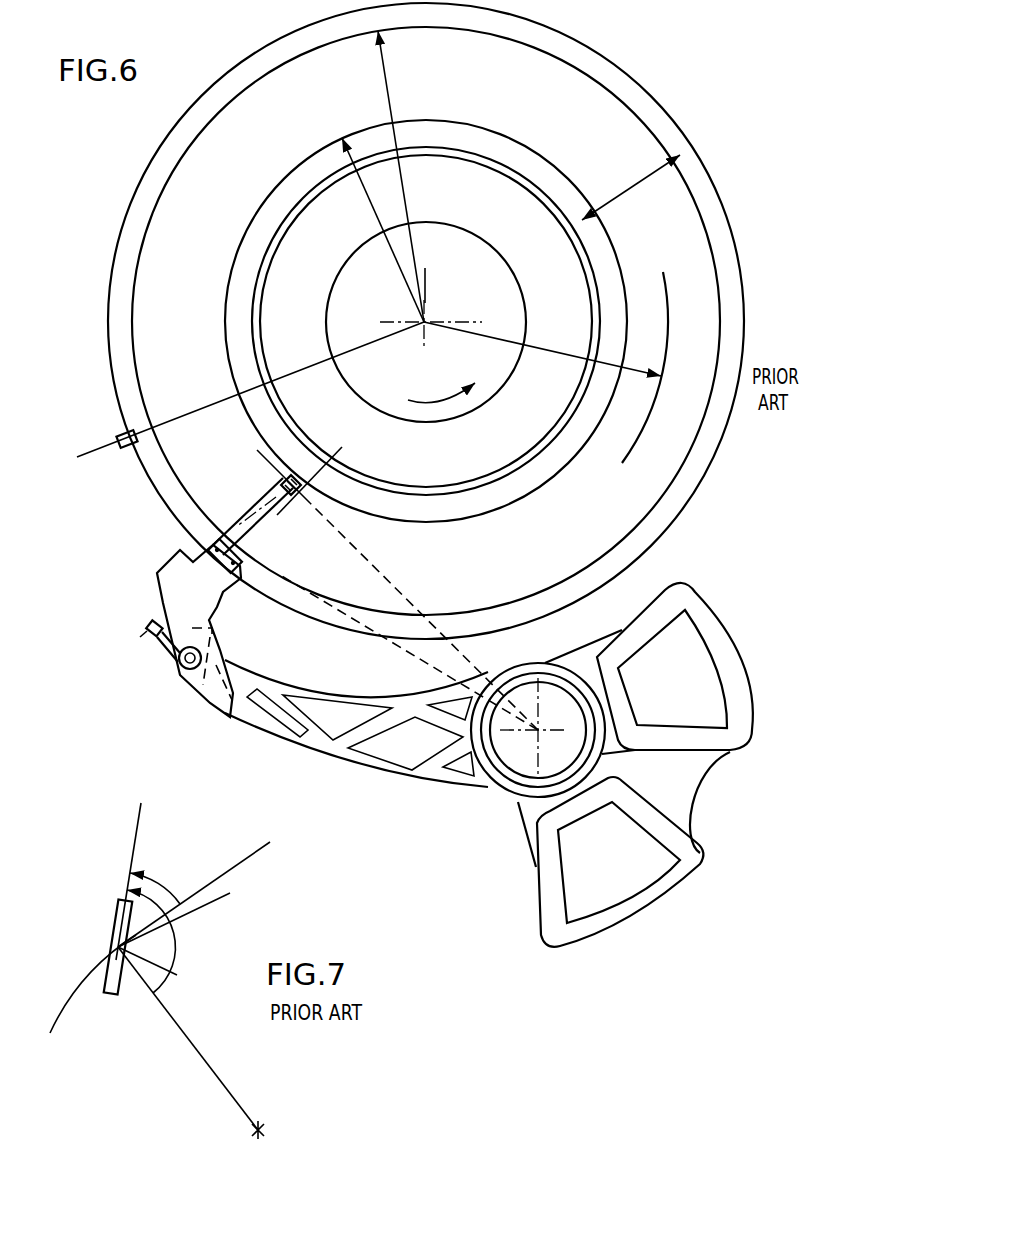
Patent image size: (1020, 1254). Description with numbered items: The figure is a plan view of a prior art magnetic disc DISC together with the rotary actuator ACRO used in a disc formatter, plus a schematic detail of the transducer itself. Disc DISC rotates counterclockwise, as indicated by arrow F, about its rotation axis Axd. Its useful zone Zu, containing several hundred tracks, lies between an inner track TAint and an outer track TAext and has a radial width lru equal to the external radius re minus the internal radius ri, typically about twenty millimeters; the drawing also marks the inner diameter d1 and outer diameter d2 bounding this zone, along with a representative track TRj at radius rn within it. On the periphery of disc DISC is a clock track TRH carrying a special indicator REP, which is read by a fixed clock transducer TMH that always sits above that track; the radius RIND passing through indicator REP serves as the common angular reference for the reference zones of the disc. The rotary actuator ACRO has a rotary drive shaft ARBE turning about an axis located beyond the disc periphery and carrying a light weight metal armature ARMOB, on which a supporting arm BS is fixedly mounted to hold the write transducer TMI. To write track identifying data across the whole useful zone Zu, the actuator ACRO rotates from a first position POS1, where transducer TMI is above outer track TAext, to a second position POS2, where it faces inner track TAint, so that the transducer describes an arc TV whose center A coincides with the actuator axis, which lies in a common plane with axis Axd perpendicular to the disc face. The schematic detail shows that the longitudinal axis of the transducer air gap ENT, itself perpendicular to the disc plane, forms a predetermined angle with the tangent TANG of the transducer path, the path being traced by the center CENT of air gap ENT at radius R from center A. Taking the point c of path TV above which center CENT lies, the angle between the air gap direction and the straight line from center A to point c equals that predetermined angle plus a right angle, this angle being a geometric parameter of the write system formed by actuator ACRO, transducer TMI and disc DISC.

In FIG. 6, the magnetic disc DISC is at (448, 321).
In FIG. 6, the outer track TAext is at (244, 96).
In FIG. 6, the inner track TAint is at (245, 230).
In FIG. 6, the external radius re is at (401, 176).
In FIG. 6, the internal radius ri is at (383, 230).
In FIG. 6, the inner diameter d1 is at (432, 118).
In FIG. 6, the outer diameter d2 is at (431, 25).
In FIG. 6, the useful zone Zu is at (613, 120).
In FIG. 6, the width of the useful zone lru is at (631, 187).
In FIG. 6, the rotation axis Axd is at (428, 320).
In FIG. 6, the radius of track n rn is at (542, 349).
In FIG. 6, the track j TRj is at (661, 367).
In FIG. 6, the arrow indicating direction of rotation F is at (441, 387).
In FIG. 6, the angular reference indicator radius RIND is at (235, 389).
In FIG. 6, the clock track TRH is at (109, 344).
In FIG. 6, the special indicator REP is at (125, 432).
In FIG. 6, the fixed clock transducer TMH is at (121, 448).
In FIG. 6, the arc of transducer path TV is at (352, 442).
In FIG. 7, the arc of transducer path TV is at (220, 897).
In FIG. 6, the write transducer TMI is at (303, 483).
In FIG. 6, the supporting arm BS is at (242, 529).
In FIG. 6, the first position POS1 is at (405, 650).
In FIG. 6, the second position POS2 is at (418, 568).
In FIG. 6, the armature ARMOB is at (278, 733).
In FIG. 6, the rotary drive shaft ARBE is at (700, 773).
In FIG. 6, the rotary actuator ACRO is at (697, 652).
In FIG. 6, the center of arc TV A is at (533, 727).
In FIG. 7, the center of arc TV A is at (271, 1130).
In FIG. 7, the arm radius R is at (154, 1032).
In FIG. 7, the air gap ENT is at (120, 907).
In FIG. 7, the center of the air gap CENT is at (116, 947).
In FIG. 7, the tangent of the transducer path TANG is at (269, 842).
In FIG. 7, the point of path TV c is at (155, 970).